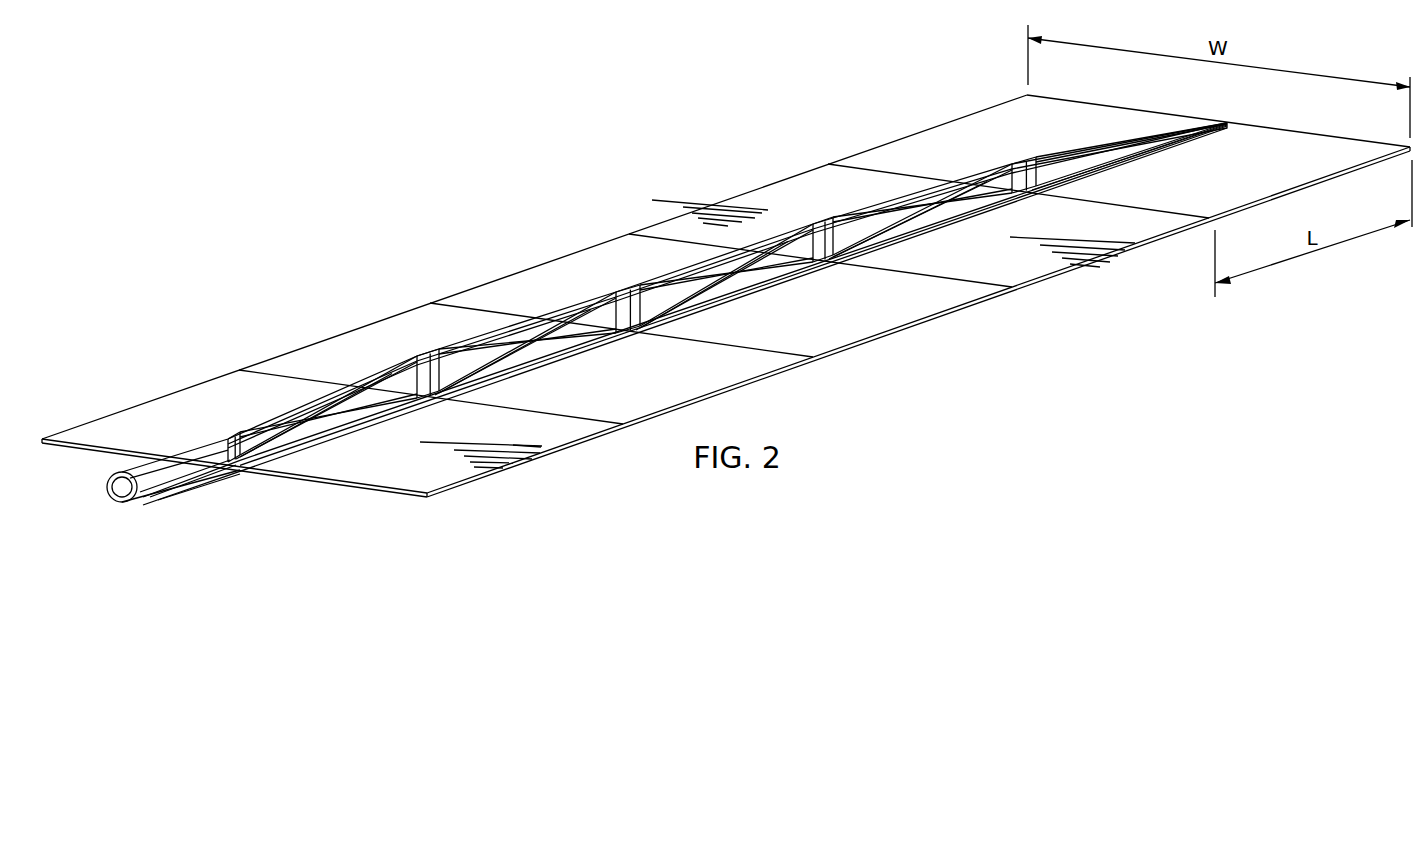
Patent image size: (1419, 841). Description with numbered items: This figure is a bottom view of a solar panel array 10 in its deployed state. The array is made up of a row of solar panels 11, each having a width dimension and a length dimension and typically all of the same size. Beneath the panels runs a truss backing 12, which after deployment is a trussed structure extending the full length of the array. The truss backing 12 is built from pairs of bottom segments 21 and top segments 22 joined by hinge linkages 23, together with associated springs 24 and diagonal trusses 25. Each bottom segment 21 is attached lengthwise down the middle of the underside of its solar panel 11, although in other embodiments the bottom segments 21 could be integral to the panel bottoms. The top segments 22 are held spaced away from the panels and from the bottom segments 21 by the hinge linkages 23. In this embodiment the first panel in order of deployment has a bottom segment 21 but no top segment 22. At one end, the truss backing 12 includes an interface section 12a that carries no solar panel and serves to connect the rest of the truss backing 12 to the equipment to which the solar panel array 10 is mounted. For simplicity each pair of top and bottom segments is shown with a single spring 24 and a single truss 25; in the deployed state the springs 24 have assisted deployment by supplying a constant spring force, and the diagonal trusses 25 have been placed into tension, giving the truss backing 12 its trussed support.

The solar panel array 10 is at (487, 155).
The solar panels 11 is at (962, 135).
The truss backing 12 is at (649, 285).
The interface section 12a is at (198, 488).
The bottom segments 21 is at (737, 297).
The top segments 22 is at (390, 367).
The hinge linkages 23 is at (857, 230).
The springs 24 is at (468, 362).
The diagonal trusses 25 is at (568, 333).